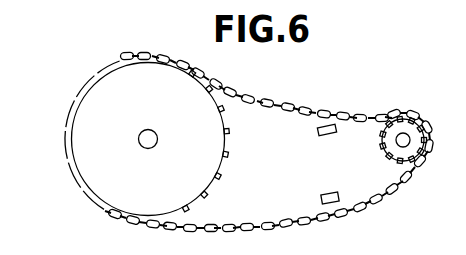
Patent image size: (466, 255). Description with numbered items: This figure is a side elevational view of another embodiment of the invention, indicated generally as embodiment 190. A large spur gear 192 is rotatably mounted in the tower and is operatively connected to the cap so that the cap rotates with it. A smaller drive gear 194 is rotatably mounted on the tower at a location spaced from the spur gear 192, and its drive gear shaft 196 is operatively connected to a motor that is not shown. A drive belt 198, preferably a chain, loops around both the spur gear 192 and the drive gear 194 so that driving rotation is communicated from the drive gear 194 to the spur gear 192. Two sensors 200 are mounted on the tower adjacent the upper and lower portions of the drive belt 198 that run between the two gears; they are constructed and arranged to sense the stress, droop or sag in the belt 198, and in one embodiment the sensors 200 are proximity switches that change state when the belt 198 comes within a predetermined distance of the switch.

The embodiment of the invention 190 is at (170, 34).
The spur gear 192 is at (100, 113).
The drive gear 194 is at (415, 125).
The drive gear shaft 196 is at (403, 132).
The drive belt 198 is at (288, 100).
The sensors 200 is at (331, 128).